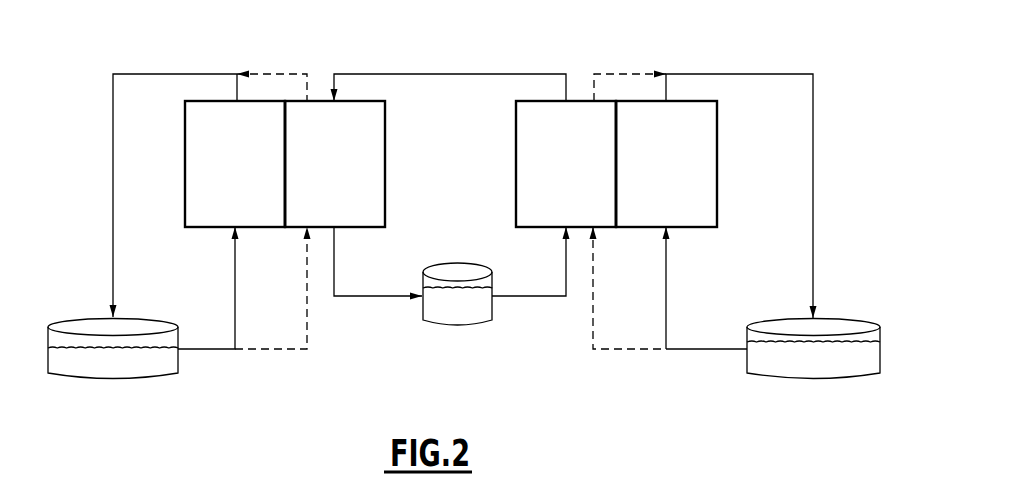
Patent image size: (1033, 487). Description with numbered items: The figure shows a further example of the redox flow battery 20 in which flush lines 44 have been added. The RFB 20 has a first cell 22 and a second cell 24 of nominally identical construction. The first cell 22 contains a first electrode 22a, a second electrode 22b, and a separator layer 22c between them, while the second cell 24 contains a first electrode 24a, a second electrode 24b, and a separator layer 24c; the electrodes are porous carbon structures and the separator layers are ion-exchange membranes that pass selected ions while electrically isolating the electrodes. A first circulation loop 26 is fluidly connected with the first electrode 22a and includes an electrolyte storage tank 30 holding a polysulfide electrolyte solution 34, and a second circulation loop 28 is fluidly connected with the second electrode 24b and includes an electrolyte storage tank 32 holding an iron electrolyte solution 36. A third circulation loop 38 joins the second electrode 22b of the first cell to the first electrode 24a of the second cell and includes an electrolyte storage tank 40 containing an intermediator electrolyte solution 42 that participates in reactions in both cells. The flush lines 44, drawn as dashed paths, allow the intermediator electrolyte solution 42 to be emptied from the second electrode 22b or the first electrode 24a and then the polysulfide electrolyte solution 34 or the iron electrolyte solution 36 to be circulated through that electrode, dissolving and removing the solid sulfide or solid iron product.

The redox flow battery 20 is at (373, 363).
The first cell 22 is at (296, 202).
The first electrode of the first cell 22a is at (212, 213).
The second electrode of the first cell 22b is at (368, 193).
The separator layer of the first cell 22c is at (285, 163).
The second cell 24 is at (616, 203).
The first electrode of the second cell 24a is at (517, 195).
The second electrode of the second cell 24b is at (700, 180).
The separator layer of the second cell 24c is at (616, 163).
The first circulation loop 26 is at (100, 197).
The second circulation loop 28 is at (823, 173).
The electrolyte storage tank 30 is at (145, 325).
The electrolyte storage tank 32 is at (772, 325).
The polysulfide electrolyte solution 34 is at (105, 366).
The iron electrolyte solution 36 is at (805, 365).
The third circulation loop 38 is at (456, 64).
The electrolyte storage tank 40 is at (452, 300).
The intermediator electrolyte solution 42 is at (455, 313).
The flush lines 44 is at (307, 315).